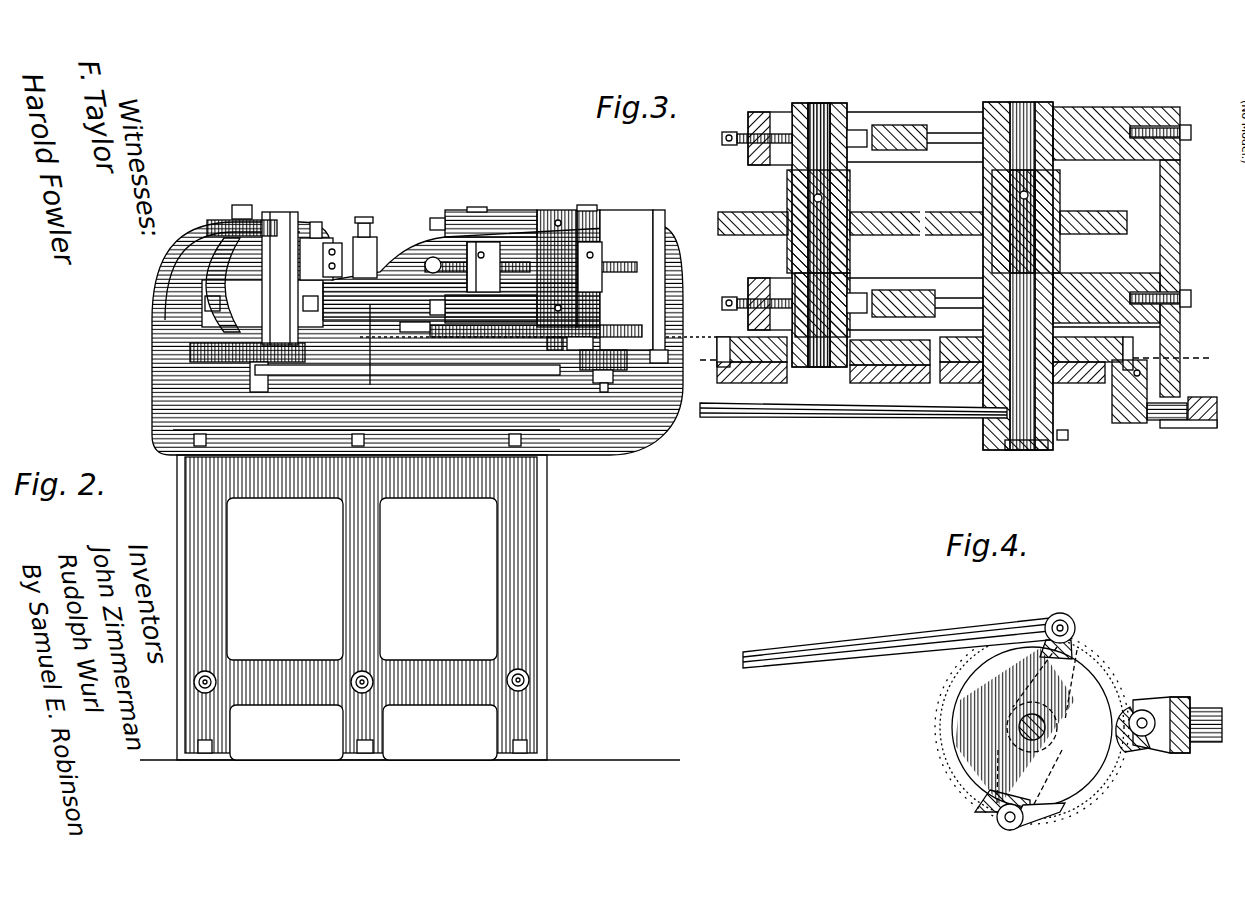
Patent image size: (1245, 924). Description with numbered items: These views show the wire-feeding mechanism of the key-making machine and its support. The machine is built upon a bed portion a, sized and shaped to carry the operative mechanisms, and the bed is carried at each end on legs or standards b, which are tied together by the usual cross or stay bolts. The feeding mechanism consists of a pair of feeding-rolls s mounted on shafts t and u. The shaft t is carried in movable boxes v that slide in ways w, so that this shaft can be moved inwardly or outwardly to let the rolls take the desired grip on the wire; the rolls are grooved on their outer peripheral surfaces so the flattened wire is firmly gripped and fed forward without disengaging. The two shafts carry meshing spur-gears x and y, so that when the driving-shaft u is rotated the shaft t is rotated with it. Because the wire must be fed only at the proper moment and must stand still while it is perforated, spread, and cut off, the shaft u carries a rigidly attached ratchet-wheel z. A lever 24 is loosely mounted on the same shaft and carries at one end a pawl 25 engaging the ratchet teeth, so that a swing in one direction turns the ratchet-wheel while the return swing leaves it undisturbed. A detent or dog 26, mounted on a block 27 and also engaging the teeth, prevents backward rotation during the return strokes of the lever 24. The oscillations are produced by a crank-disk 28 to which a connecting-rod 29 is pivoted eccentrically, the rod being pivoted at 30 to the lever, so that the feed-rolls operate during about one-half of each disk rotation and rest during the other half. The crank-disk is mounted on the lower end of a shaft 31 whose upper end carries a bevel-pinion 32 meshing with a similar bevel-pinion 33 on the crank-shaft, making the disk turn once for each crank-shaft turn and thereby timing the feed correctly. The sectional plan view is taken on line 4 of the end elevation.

In FIG. 2, the bed portion a is at (625, 455).
In FIG. 2, the legs or standards b is at (545, 612).
In FIG. 2, the section line 4 is at (529, 345).
In FIG. 4, the lever 24 is at (1073, 640).
In FIG. 2, the pawl 25 is at (576, 362).
In FIG. 4, the pawl 25 is at (998, 813).
In FIG. 4, the detent or dog 26 is at (1142, 737).
In FIG. 2, the block 27 is at (660, 270).
In FIG. 3, the block 27 is at (1181, 238).
In FIG. 4, the block 27 is at (1178, 697).
In FIG. 2, the crank-disk 28 is at (192, 362).
In FIG. 2, the connecting-rod 29 is at (460, 375).
In FIG. 3, the connecting-rod 29 is at (836, 420).
In FIG. 4, the connecting-rod 29 is at (858, 647).
In FIG. 4, the pivot 30 is at (1066, 620).
In FIG. 2, the shaft 31 is at (250, 210).
In FIG. 2, the bevel-pinion 32 is at (218, 222).
In FIG. 2, the bevel-pinion 33 is at (195, 262).
In FIG. 2, the feeding-rolls s is at (522, 264).
In FIG. 3, the feeding-rolls s is at (890, 212).
In FIG. 3, the shaft t is at (818, 108).
In FIG. 2, the driving-shaft u is at (588, 208).
In FIG. 3, the driving-shaft u is at (1026, 108).
In FIG. 2, the movable boxes v is at (482, 210).
In FIG. 3, the movable boxes v is at (795, 110).
In FIG. 2, the ways w is at (516, 210).
In FIG. 3, the ways w is at (875, 120).
In FIG. 2, the spur-gear x is at (458, 337).
In FIG. 3, the spur-gear x is at (880, 362).
In FIG. 2, the spur-gear y is at (643, 330).
In FIG. 3, the spur-gear y is at (934, 362).
In FIG. 2, the ratchet-wheel z is at (556, 351).
In FIG. 3, the ratchet-wheel z is at (1092, 380).
In FIG. 4, the ratchet-wheel z is at (1032, 727).